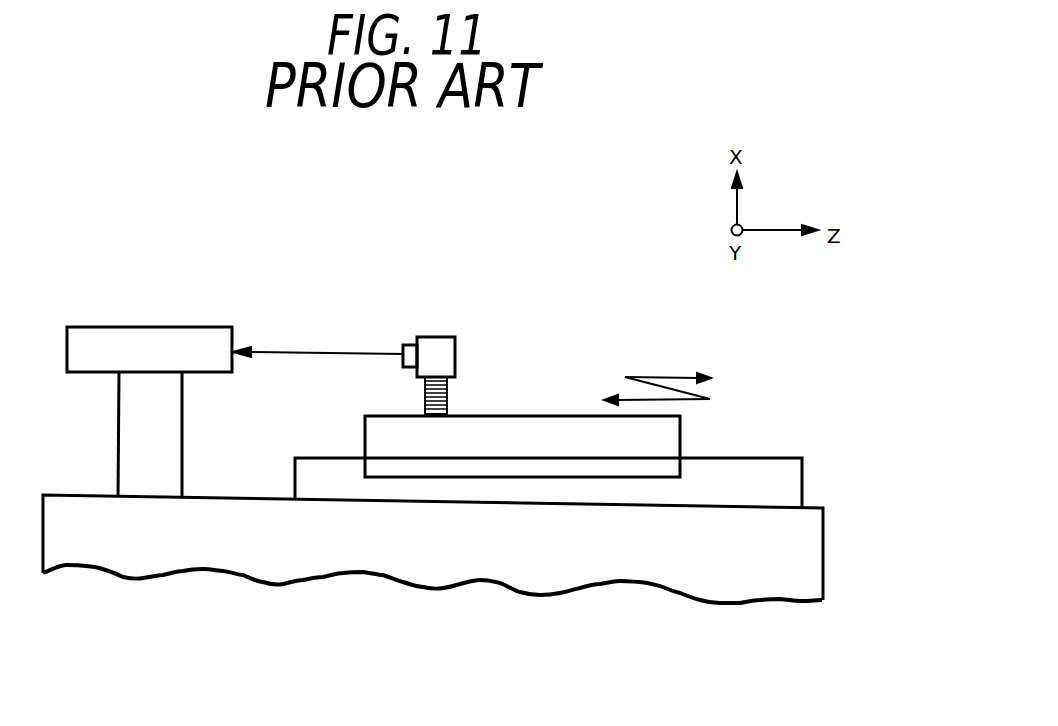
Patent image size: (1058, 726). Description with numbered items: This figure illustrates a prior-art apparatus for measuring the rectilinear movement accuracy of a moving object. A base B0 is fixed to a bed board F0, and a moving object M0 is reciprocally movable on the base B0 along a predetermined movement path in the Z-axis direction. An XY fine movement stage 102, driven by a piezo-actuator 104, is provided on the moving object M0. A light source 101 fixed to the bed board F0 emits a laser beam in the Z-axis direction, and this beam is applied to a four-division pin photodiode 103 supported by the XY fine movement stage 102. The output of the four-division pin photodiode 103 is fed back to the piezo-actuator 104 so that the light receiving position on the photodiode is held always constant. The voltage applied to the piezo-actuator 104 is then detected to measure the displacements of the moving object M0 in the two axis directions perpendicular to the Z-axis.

The light source 101 is at (192, 335).
The XY fine movement stage 102 is at (435, 343).
The four-division pin photodiode 103 is at (403, 350).
The piezo-actuator 104 is at (447, 393).
The bed board F0 is at (121, 552).
The base B0 is at (334, 485).
The moving object M0 is at (602, 460).